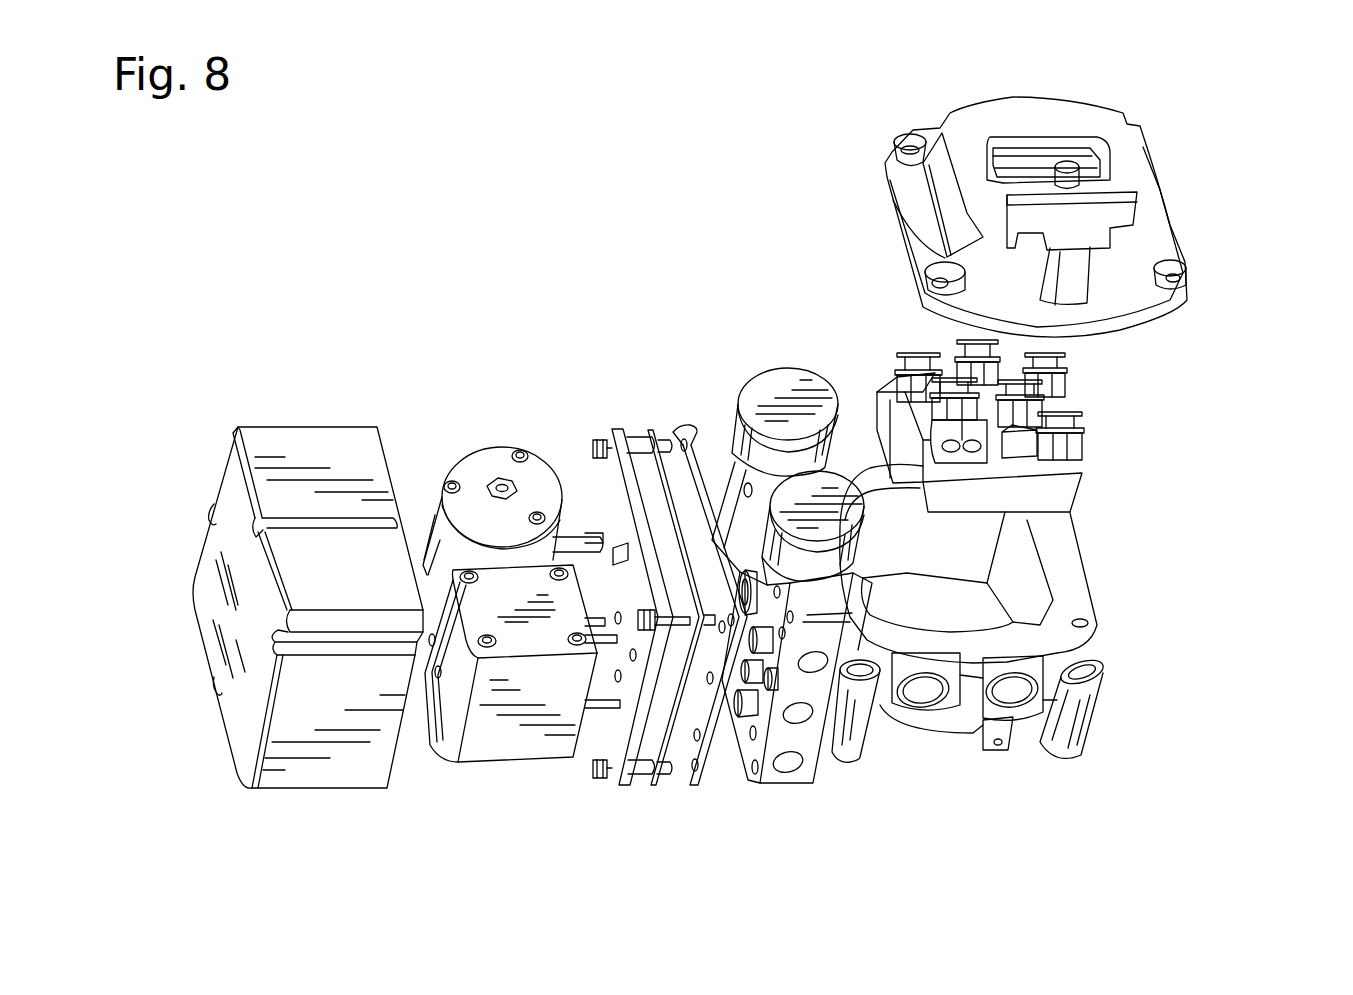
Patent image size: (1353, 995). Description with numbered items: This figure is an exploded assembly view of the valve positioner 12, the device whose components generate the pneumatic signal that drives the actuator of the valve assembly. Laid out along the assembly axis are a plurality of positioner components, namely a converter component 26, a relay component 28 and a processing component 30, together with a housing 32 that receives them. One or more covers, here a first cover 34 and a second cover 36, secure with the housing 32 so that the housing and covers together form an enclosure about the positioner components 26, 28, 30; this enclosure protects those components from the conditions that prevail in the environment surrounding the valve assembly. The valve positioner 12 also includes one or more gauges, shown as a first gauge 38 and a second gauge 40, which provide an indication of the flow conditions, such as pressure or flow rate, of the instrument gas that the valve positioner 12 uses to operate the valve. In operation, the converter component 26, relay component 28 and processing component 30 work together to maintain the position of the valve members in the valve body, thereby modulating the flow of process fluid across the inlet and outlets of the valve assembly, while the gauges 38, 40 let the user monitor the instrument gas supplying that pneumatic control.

The valve positioner 12 is at (377, 283).
The converter component 26 is at (467, 441).
The relay component 28 is at (547, 772).
The processing component 30 is at (1098, 427).
The housing 32 is at (1097, 800).
The first cover 34 is at (1177, 188).
The second cover 36 is at (199, 460).
The first gauge 38 is at (760, 368).
The second gauge 40 is at (773, 502).